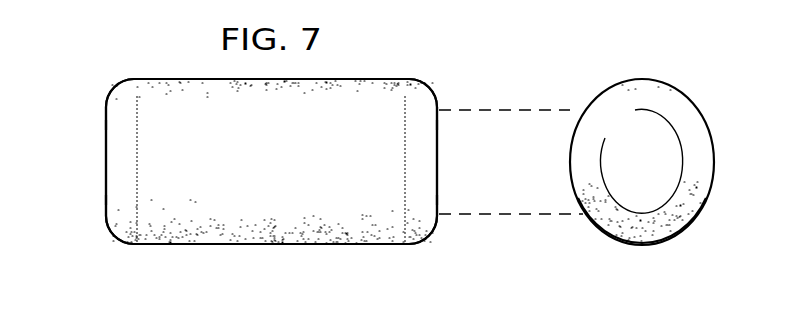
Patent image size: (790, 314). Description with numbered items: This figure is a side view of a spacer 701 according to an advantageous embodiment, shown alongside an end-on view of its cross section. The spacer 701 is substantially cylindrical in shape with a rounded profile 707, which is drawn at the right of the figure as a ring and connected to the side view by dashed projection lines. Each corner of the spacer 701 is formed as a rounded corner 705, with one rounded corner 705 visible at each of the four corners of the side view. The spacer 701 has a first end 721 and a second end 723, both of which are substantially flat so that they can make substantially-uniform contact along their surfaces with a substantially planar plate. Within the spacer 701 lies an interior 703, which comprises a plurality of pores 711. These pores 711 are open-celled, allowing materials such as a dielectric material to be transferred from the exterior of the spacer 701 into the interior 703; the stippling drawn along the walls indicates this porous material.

The spacer 701 is at (208, 247).
The interior 703 is at (290, 173).
The rounded corner 705 is at (116, 90).
The rounded profile 707 is at (676, 90).
The pores 711 is at (296, 235).
The first end 721 is at (106, 162).
The second end 723 is at (438, 160).